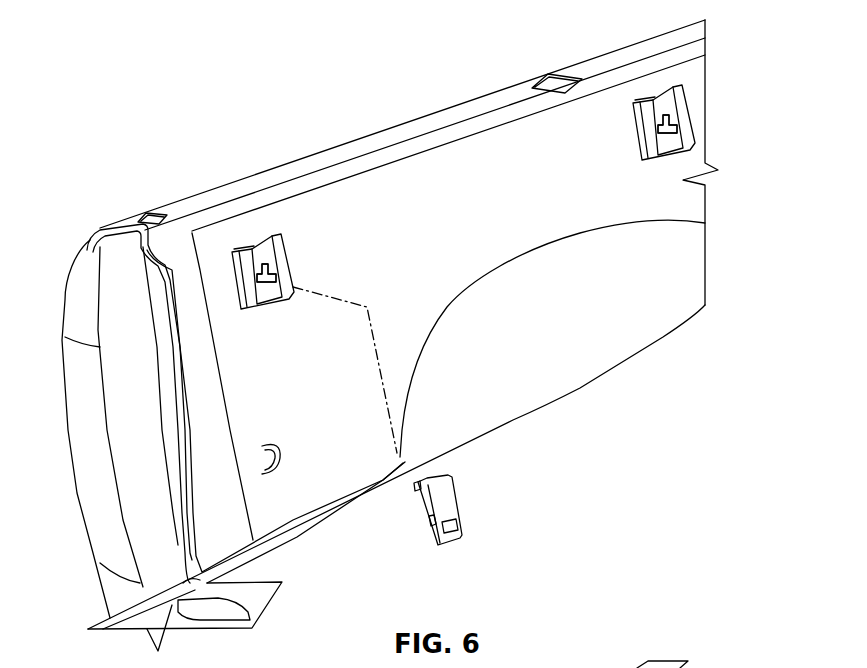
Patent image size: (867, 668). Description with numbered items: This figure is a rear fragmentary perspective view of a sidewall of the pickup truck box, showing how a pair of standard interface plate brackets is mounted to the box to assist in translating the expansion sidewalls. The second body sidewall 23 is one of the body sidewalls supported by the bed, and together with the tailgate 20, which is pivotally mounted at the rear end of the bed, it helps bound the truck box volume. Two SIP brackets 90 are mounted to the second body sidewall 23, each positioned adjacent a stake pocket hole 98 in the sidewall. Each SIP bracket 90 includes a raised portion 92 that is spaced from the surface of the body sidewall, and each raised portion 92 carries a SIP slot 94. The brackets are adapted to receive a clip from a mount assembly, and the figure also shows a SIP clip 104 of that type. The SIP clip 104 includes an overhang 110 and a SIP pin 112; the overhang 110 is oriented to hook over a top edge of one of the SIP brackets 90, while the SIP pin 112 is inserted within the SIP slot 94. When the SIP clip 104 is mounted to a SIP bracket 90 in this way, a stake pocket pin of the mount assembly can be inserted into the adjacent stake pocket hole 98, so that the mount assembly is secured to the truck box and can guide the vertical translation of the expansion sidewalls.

The tailgate 20 is at (107, 615).
The second body sidewall 23 is at (390, 137).
The SIP bracket 90 is at (446, 161).
The raised portion 92 is at (688, 97).
The SIP slot 94 is at (680, 124).
The stake pocket hole 98 is at (547, 77).
The SIP clip 104 is at (454, 501).
The overhang 110 is at (420, 490).
The SIP pin 112 is at (437, 522).